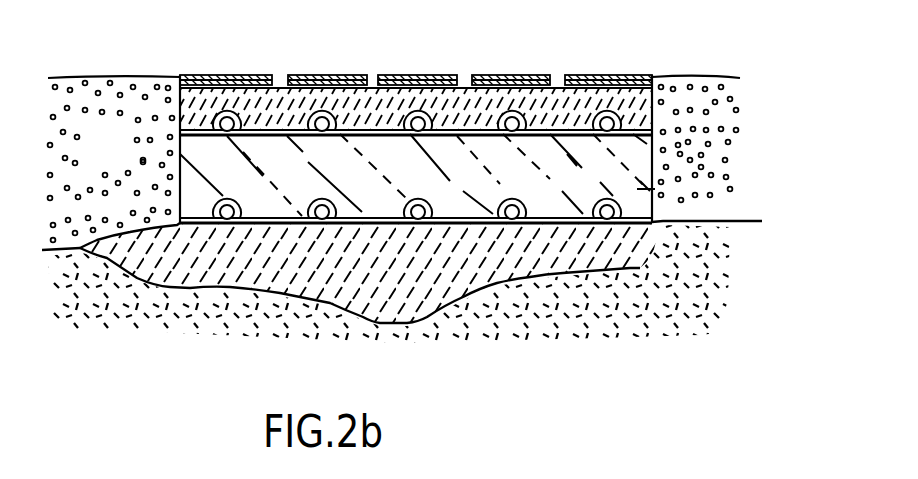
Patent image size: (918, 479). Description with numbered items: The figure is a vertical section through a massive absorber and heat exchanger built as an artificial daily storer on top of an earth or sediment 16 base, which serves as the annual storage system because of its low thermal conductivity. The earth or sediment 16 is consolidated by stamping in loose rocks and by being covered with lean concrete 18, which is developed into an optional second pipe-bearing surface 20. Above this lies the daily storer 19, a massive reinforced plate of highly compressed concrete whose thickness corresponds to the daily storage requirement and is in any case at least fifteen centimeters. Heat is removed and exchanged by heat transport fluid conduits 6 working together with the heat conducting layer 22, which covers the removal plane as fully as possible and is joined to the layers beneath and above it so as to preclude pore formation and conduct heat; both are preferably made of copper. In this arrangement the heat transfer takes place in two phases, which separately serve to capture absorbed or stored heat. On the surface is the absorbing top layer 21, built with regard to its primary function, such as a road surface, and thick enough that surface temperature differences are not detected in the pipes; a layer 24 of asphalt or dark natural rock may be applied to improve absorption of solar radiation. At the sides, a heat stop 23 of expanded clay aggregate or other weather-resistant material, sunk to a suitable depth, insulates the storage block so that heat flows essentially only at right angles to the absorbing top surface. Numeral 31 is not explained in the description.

The heat transport fluid conduits 6 is at (625, 118).
The earth or sediment 16 is at (570, 308).
The lean concrete 18 is at (418, 230).
The daily storer 19 is at (640, 268).
The second pipe-bearing surface 20 is at (648, 132).
The absorbing top layer 21 is at (557, 115).
The heat conducting layer 22 is at (625, 120).
The heat stop 23 is at (127, 160).
The layer of asphalt or dark natural rock 24 is at (523, 74).
The tile 31 is at (327, 74).